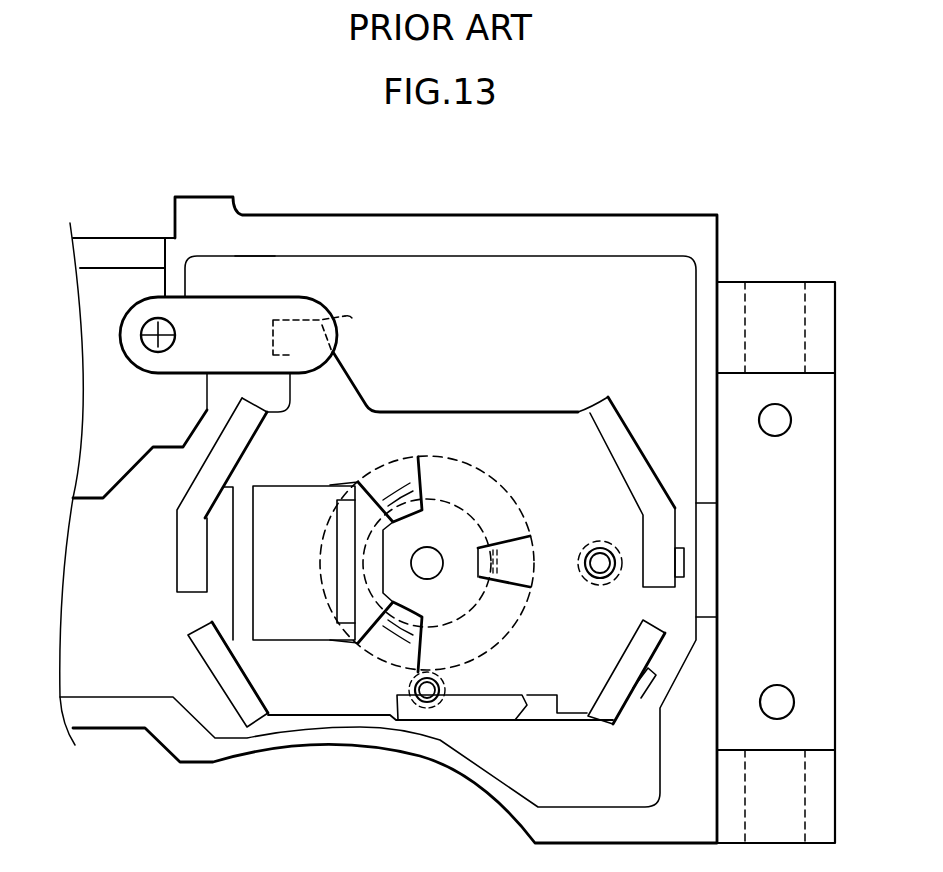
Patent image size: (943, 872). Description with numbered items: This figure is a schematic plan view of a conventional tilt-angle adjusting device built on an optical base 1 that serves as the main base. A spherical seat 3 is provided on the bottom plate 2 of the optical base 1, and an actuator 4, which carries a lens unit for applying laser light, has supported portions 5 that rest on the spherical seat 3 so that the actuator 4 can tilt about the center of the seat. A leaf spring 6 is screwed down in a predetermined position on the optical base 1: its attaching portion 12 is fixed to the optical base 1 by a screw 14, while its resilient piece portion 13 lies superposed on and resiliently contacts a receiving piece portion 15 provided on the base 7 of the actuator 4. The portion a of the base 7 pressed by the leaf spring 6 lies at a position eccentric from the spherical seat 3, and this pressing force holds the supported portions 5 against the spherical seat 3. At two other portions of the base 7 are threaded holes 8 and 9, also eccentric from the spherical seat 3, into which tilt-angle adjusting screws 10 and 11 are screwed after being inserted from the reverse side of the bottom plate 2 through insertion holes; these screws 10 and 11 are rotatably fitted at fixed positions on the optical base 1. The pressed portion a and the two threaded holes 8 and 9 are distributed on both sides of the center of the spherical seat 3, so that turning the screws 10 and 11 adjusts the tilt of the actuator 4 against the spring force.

The optical base 1 is at (528, 215).
The bottom plate 2 is at (443, 280).
The spherical seat 3 is at (503, 490).
The actuator 4 is at (487, 412).
The supported portions 5 is at (518, 533).
The leaf spring 6 is at (250, 297).
The base 7 is at (371, 412).
The threaded hole 8 is at (600, 578).
The threaded hole 9 is at (442, 684).
The tilt-angle adjusting screw 10 is at (597, 542).
The tilt-angle adjusting screw 11 is at (410, 683).
The attaching portion 12 is at (140, 315).
The resilient piece portion 13 is at (305, 307).
The screw 14 is at (147, 343).
The receiving piece portion 15 is at (352, 318).
The resiliently pressed portion a is at (273, 322).